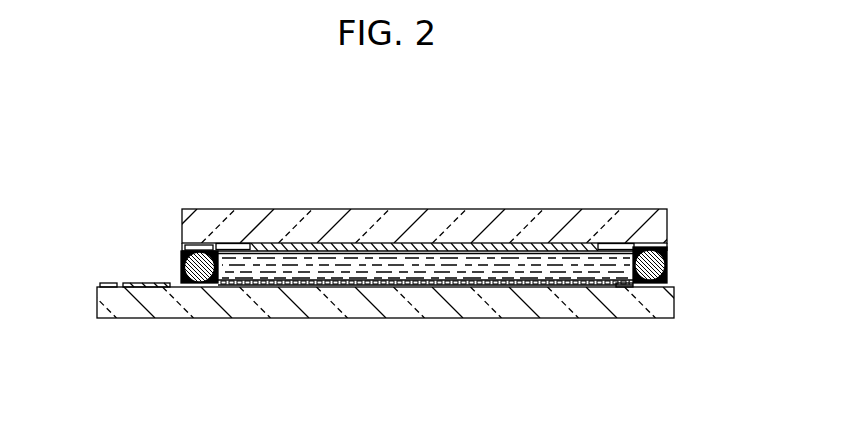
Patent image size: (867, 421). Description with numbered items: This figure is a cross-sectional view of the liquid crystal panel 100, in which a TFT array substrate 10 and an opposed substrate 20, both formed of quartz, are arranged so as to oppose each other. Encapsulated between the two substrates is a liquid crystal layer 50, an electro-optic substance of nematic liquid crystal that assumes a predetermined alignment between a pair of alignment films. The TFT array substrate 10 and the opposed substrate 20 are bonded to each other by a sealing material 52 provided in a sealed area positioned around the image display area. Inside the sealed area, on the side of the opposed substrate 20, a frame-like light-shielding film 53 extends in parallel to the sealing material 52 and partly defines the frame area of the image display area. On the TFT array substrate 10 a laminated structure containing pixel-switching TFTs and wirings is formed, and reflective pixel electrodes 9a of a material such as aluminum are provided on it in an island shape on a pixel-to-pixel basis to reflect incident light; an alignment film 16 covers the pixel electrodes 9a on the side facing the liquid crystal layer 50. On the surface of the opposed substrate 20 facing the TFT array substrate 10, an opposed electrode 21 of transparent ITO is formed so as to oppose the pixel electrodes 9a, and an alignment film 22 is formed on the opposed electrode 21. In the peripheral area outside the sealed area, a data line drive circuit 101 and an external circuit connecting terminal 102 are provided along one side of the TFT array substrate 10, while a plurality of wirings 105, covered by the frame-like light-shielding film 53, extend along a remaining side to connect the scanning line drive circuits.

The liquid crystal panel 100 is at (646, 97).
The TFT array substrate 10 is at (478, 306).
The opposed substrate 20 is at (406, 218).
The opposed electrode 21 is at (563, 247).
The alignment film 22 is at (509, 251).
The liquid crystal layer 50 is at (426, 272).
The sealing material 52 is at (186, 252).
The frame-like light-shielding film 53 is at (240, 245).
The alignment film 16 is at (571, 277).
The pixel electrodes 9a is at (275, 286).
The data line drive circuit 101 is at (143, 283).
The external circuit connecting terminal 102 is at (113, 283).
The wirings 105 is at (628, 285).